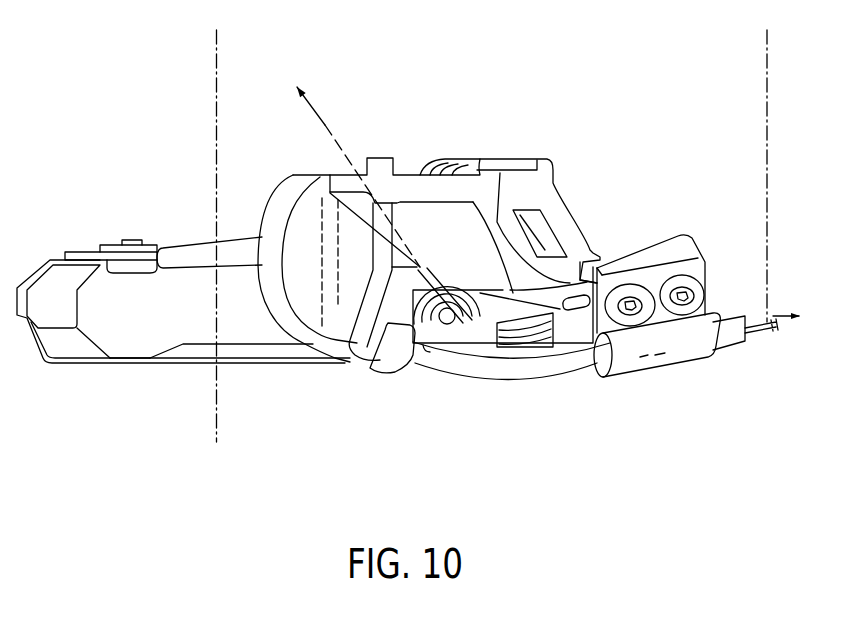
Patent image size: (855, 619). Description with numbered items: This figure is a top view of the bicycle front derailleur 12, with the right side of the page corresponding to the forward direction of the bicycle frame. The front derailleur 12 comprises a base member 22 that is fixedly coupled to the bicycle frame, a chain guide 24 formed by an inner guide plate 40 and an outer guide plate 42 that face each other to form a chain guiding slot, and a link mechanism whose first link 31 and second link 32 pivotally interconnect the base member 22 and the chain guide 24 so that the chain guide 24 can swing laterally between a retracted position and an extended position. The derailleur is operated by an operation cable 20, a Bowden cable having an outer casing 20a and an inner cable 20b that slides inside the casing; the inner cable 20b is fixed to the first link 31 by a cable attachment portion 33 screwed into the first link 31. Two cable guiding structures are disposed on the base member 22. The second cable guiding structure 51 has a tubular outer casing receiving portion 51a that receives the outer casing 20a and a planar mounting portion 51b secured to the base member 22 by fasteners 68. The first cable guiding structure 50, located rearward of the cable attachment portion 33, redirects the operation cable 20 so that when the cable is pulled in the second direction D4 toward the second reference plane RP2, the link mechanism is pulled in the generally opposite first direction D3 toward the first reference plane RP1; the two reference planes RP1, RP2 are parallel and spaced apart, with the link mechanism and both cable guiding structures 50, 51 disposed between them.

The bicycle front derailleur 12 is at (315, 437).
The operation cable 20 is at (807, 389).
The outer casing 20a is at (727, 342).
The inner cable 20b is at (766, 325).
The base member 22 is at (566, 190).
The chain guide 24 is at (177, 371).
The first link 31 is at (482, 313).
The second link 32 is at (466, 348).
The cable attachment portion 33 is at (520, 352).
The inner guide plate 40 is at (201, 242).
The outer guide plate 42 is at (86, 364).
The first cable guiding structure 50 is at (261, 201).
The second cable guiding structure 51 is at (700, 243).
The outer casing receiving portion 51a is at (643, 372).
The mounting portion 51b is at (650, 274).
The fastener 68 is at (628, 303).
The first reference plane RP1 is at (216, 43).
The second reference plane RP2 is at (766, 45).
The first direction D3 is at (323, 120).
The second direction D4 is at (790, 310).